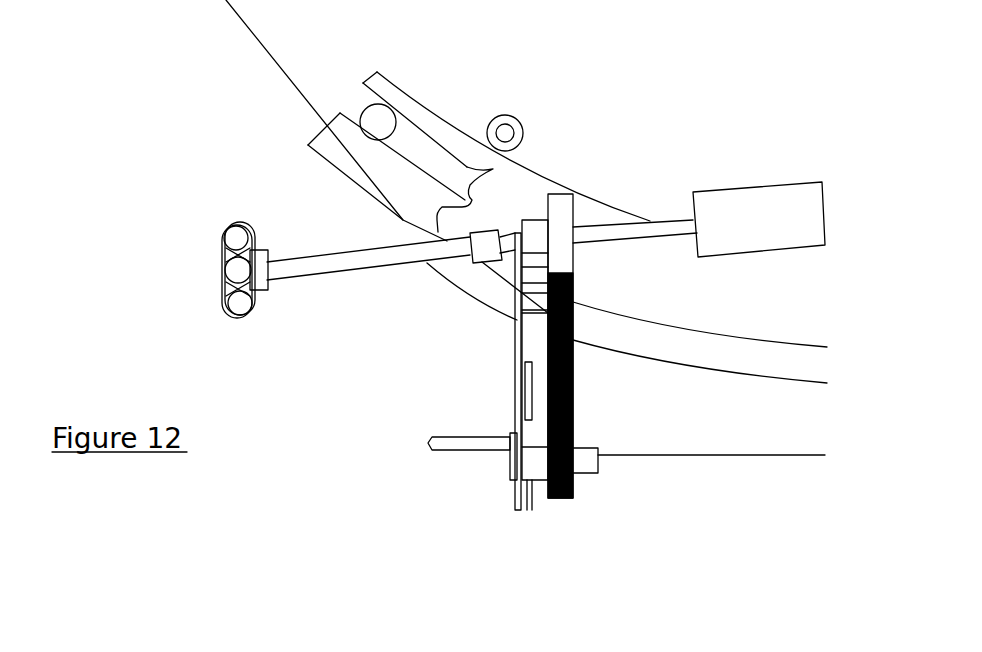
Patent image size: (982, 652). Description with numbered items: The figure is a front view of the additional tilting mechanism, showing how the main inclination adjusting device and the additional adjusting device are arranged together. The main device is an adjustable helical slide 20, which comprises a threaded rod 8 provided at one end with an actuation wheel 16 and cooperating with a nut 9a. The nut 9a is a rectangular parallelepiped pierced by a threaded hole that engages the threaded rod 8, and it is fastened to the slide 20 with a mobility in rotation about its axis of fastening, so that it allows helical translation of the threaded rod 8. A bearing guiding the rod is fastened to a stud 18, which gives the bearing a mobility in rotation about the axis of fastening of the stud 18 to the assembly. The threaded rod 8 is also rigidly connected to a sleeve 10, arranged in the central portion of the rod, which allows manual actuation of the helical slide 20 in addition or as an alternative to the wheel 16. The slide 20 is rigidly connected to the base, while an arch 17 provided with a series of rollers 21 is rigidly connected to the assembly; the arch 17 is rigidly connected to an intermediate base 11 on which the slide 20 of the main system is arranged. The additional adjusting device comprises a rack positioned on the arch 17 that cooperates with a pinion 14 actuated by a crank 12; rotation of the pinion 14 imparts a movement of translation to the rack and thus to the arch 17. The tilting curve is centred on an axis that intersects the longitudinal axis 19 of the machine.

The threaded rod 8 is at (322, 262).
The nut 9a is at (492, 250).
The sleeve 10 is at (722, 220).
The intermediate base 11 is at (478, 285).
The crank 12 is at (438, 437).
The pinion 14 is at (570, 488).
The actuation wheel 16 is at (225, 282).
The arch 17 is at (562, 203).
The stud 18 is at (508, 137).
The longitudinal axis 19 is at (573, 387).
The adjustable helical slide 20 is at (397, 187).
The rollers 21 is at (373, 118).